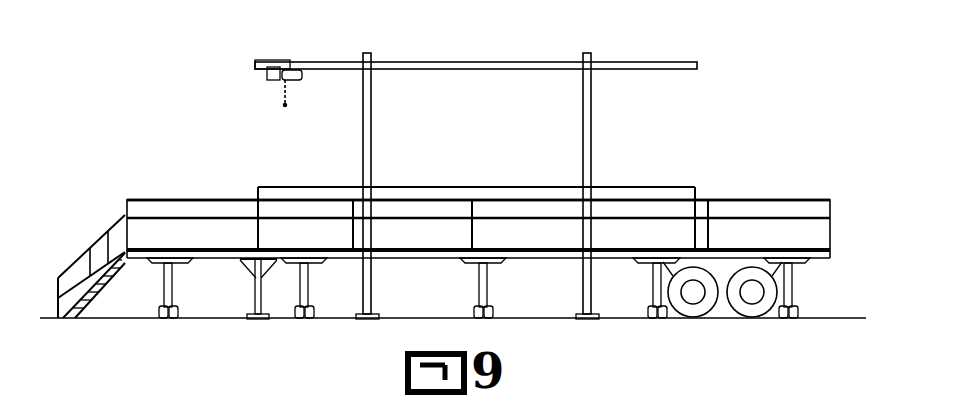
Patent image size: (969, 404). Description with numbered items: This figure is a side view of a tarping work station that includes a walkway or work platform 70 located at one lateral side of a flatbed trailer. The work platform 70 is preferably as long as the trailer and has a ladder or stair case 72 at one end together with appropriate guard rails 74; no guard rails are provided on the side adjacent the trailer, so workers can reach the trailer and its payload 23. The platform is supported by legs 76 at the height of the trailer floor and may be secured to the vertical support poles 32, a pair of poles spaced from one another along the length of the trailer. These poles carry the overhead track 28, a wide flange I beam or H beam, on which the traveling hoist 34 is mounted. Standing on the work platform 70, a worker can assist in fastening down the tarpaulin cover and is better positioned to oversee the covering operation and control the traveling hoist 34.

The payload 23 is at (495, 187).
The overhead track 28 is at (470, 62).
The vertical support poles 32 is at (371, 105).
The traveling hoist 34 is at (284, 82).
The work platform 70 is at (820, 248).
The stair case 72 is at (103, 284).
The guard rails 74 is at (185, 198).
The legs 76 is at (173, 294).